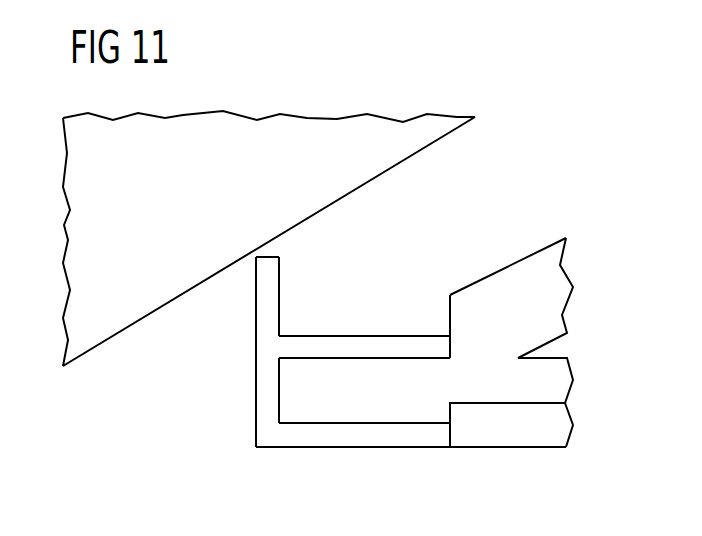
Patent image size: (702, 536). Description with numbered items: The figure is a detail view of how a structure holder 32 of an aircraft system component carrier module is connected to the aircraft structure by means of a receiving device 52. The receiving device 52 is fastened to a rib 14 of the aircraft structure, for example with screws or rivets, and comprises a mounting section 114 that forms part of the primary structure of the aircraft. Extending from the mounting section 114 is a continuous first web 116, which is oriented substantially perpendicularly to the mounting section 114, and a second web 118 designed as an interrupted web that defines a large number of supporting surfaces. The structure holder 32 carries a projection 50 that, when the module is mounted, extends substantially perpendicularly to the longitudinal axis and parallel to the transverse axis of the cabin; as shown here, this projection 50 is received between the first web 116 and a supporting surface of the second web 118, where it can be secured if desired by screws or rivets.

The rib 14 is at (366, 177).
The structure holder 32 is at (291, 466).
The projection 50 is at (327, 370).
The receiving device 52 is at (232, 404).
The mounting section 114 is at (266, 303).
The first web 116 is at (404, 340).
The second web 118 is at (405, 437).